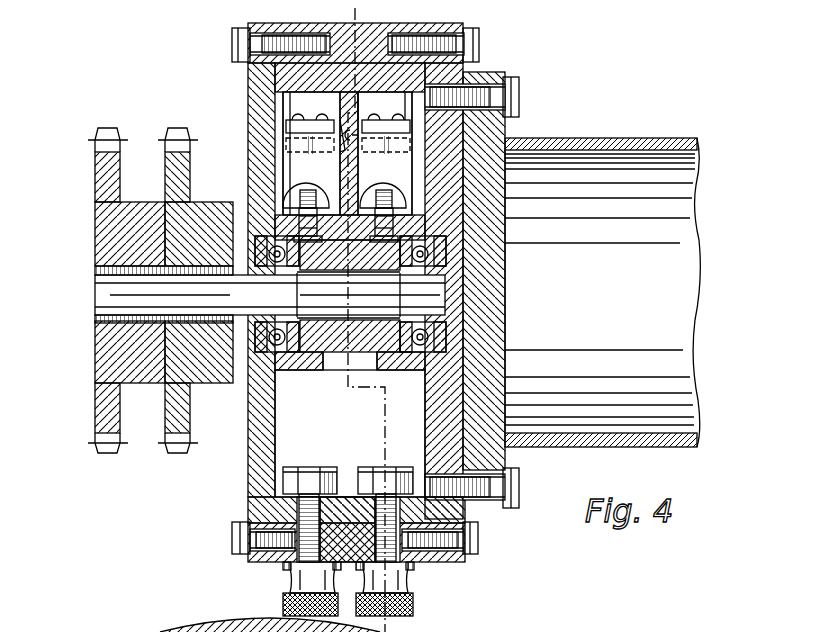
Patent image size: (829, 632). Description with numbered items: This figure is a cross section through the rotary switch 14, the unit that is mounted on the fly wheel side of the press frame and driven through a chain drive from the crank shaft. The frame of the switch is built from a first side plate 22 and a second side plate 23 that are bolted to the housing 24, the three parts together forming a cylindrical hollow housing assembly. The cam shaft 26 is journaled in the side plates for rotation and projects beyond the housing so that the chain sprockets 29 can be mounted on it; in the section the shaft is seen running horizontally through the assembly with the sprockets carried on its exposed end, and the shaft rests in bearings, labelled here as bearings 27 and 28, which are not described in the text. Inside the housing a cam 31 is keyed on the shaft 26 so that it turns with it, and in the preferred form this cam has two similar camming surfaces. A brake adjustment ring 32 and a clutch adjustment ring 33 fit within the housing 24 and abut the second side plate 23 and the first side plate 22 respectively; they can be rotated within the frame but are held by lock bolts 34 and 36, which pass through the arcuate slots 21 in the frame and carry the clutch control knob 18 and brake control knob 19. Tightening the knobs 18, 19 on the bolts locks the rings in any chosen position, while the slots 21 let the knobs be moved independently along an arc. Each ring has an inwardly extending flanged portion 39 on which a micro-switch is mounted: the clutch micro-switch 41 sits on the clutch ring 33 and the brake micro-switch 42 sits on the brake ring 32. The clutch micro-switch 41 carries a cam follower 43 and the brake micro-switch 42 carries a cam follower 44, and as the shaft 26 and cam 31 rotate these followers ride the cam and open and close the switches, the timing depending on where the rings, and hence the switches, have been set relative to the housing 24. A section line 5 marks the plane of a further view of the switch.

The section line 5 is at (355, 15).
The rotary switch 14 is at (246, 480).
The clutch control knob 18 is at (410, 581).
The brake control knob 19 is at (290, 582).
The arcuate slots 21 is at (284, 566).
The first side plate 22 is at (248, 432).
The second side plate 23 is at (446, 418).
The housing 24 is at (418, 27).
The cam shaft 26 is at (118, 293).
The bearing 27 is at (292, 310).
The bearing 28 is at (436, 310).
The chain sprockets 29 is at (175, 452).
The cam 31 is at (342, 362).
The brake adjustment ring 32 is at (338, 500).
The clutch adjustment ring 33 is at (448, 512).
The lock bolt 34 is at (310, 478).
The lock bolt 36 is at (382, 476).
The inwardly extending flanged portion 39 is at (283, 108).
The clutch micro-switch 41 is at (404, 178).
The brake micro-switch 42 is at (322, 178).
The cam follower 43 is at (380, 222).
The cam follower 44 is at (297, 218).